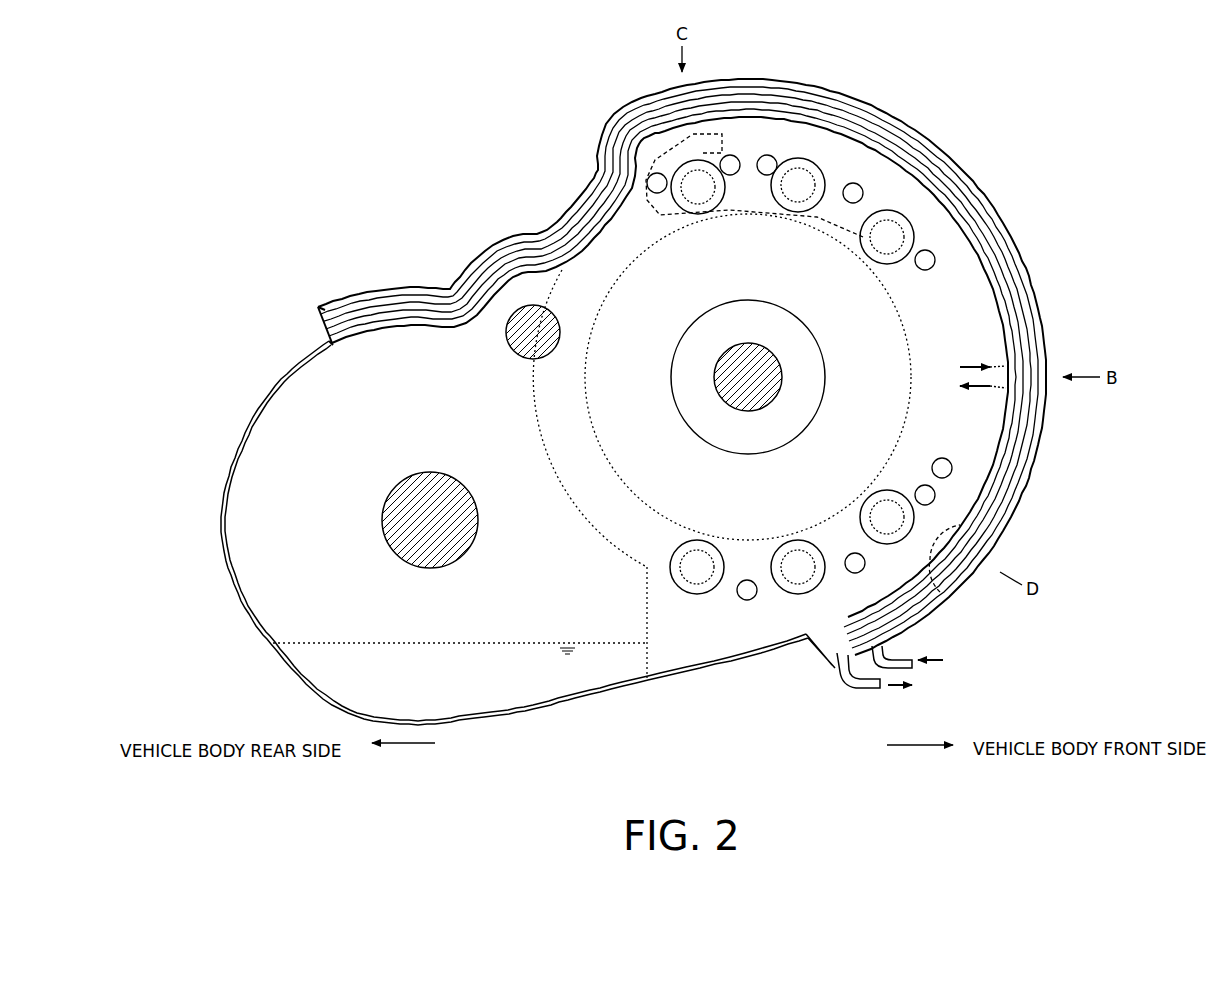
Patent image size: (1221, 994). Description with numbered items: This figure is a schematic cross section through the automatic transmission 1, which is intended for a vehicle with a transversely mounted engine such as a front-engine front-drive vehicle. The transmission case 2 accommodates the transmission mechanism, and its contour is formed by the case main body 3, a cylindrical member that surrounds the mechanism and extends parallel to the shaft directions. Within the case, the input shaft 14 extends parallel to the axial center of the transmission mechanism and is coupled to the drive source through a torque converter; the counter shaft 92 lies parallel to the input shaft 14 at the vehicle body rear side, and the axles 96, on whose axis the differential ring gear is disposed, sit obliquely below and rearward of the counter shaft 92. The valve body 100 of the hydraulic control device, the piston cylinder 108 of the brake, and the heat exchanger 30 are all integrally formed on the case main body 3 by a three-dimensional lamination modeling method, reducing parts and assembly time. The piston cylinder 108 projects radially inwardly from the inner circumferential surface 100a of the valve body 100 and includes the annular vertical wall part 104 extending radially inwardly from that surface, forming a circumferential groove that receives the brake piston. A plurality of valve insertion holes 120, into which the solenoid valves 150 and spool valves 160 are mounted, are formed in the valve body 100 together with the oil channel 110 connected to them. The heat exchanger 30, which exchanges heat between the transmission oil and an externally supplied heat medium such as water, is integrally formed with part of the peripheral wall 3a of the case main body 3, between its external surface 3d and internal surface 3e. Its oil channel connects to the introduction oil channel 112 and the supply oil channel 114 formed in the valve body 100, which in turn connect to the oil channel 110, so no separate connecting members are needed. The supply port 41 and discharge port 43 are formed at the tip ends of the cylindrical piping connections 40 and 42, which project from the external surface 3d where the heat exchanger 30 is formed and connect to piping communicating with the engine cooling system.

The automatic transmission 1 is at (1020, 128).
The transmission case 2 is at (420, 212).
The case main body 3 is at (488, 240).
The peripheral wall 3a is at (405, 290).
The external surface 3d is at (358, 300).
The internal surface 3e is at (358, 338).
The input shaft 14 is at (717, 380).
The heat exchanger 30 is at (1030, 258).
The piping connection 40 is at (905, 650).
The supply port 41 is at (910, 666).
The piping connection 42 is at (847, 695).
The discharge port 43 is at (882, 690).
The counter shaft 92 is at (557, 320).
The axles 96 is at (382, 517).
The valve body 100 is at (533, 400).
The inner circumferential surface 100a is at (588, 368).
The vertical wall part 104 is at (778, 301).
The piston cylinder 108 is at (815, 350).
The oil channel 110 is at (693, 134).
The introduction oil channel 112 is at (1000, 364).
The supply oil channel 114 is at (1000, 392).
The valve insertion holes 120 is at (655, 194).
The solenoid valves 150 is at (773, 207).
The spool valves 160 is at (845, 187).